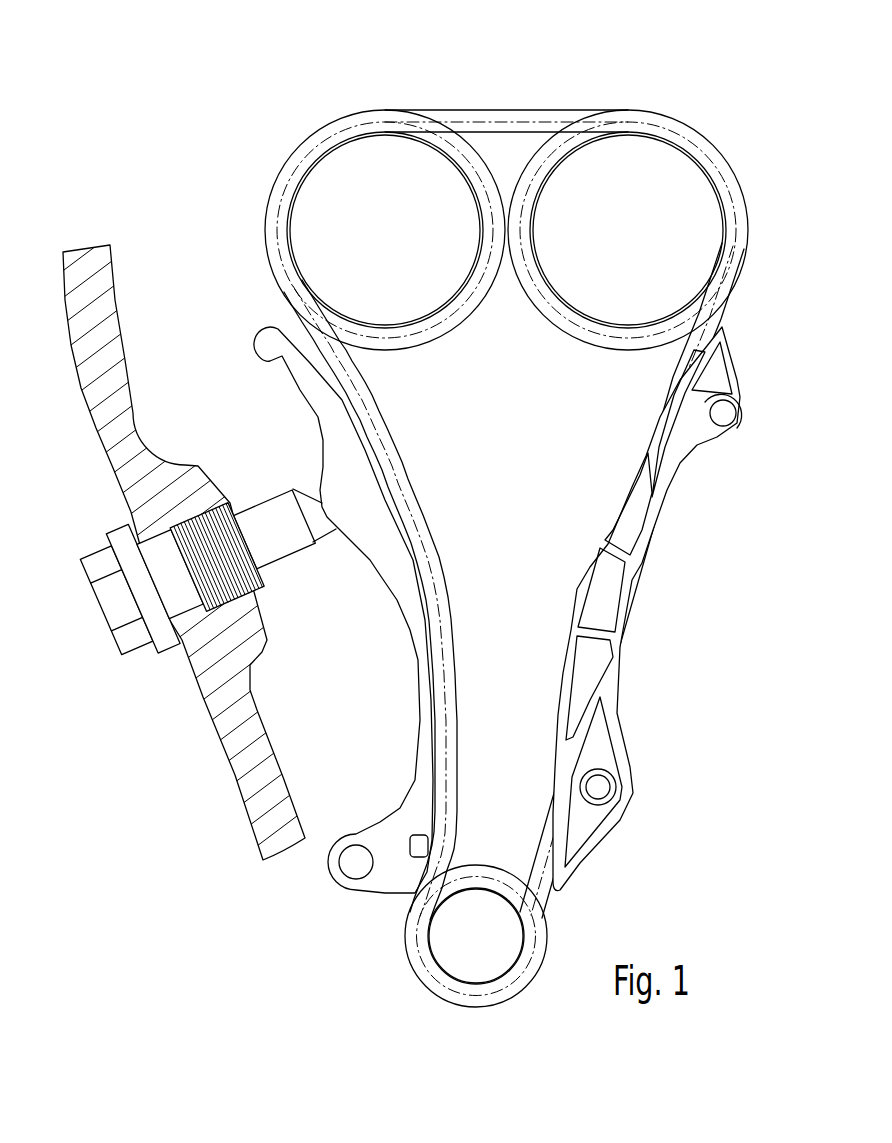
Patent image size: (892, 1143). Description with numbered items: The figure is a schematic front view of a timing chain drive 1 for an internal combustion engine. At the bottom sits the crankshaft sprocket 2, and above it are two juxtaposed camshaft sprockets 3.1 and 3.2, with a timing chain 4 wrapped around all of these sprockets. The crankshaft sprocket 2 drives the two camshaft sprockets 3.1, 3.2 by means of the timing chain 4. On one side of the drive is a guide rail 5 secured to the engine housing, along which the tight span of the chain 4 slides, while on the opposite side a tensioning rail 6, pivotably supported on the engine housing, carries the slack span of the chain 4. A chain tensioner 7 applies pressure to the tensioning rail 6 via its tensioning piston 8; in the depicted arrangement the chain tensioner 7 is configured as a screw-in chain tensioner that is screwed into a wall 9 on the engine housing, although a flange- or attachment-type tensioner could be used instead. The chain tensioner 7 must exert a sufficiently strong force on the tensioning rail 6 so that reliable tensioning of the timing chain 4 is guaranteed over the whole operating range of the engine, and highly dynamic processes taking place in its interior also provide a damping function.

The timing chain drive 1 is at (733, 100).
The crankshaft sprocket 2 is at (472, 932).
The camshaft sprocket 3.1 is at (358, 232).
The camshaft sprocket 3.2 is at (638, 210).
The timing chain 4 is at (515, 102).
The guide rail 5 is at (642, 698).
The tensioning rail 6 is at (403, 768).
The chain tensioner 7 is at (118, 672).
The tensioning piston 8 is at (336, 552).
The wall 9 is at (110, 408).